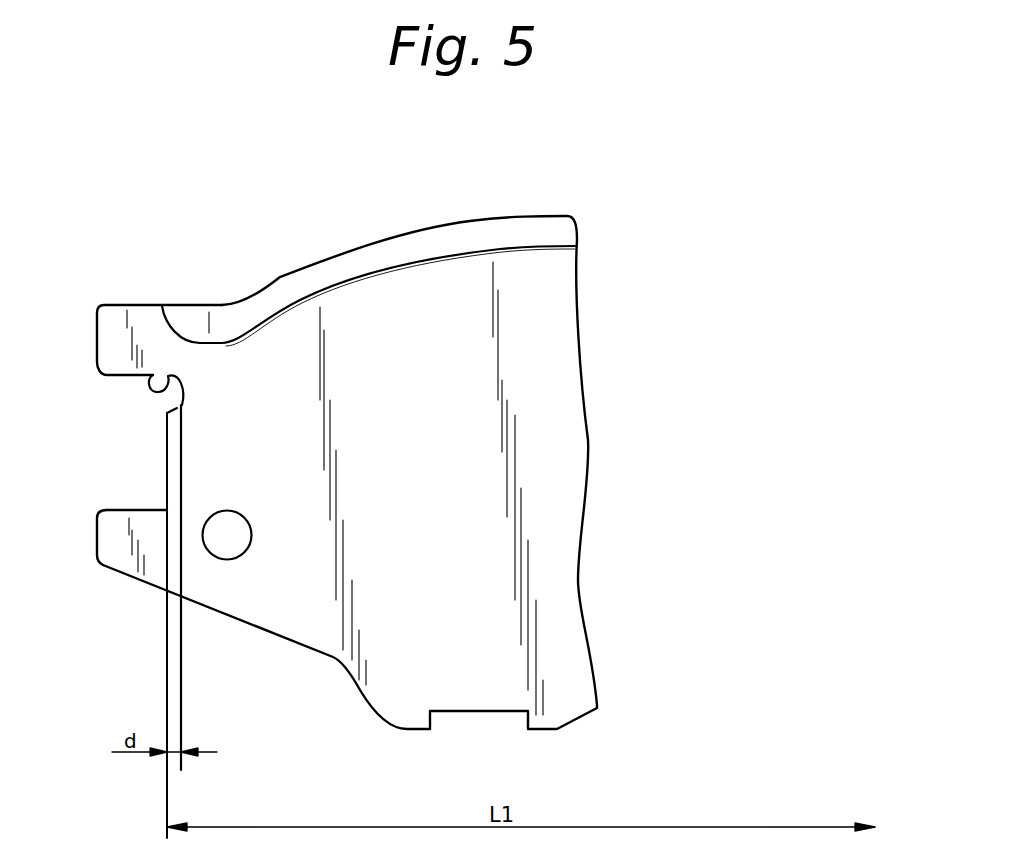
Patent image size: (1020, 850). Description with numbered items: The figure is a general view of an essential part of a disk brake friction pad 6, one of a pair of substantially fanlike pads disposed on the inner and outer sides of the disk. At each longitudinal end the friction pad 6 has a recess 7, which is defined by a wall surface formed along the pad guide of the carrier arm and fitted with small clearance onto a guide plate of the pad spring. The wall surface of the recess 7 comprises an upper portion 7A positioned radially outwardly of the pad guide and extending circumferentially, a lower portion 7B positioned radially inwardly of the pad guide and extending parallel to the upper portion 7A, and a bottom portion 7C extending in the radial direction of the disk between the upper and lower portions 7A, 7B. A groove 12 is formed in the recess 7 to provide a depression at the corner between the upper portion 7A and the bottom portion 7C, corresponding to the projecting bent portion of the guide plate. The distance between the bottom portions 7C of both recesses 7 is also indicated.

The friction pad 6 is at (565, 445).
The recess 7 is at (137, 553).
The upper portion 7A is at (108, 377).
The lower portion 7B is at (117, 510).
The bottom portion 7C is at (166, 442).
The groove 12 is at (155, 375).